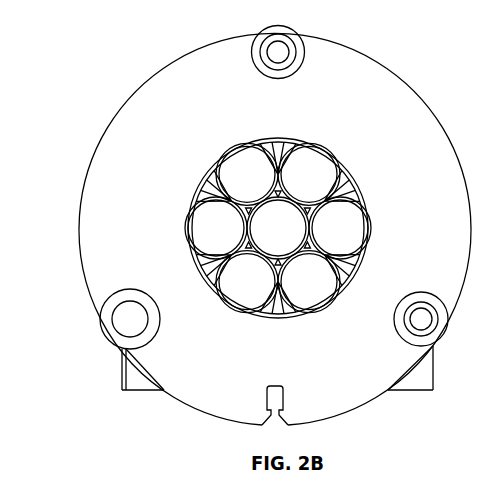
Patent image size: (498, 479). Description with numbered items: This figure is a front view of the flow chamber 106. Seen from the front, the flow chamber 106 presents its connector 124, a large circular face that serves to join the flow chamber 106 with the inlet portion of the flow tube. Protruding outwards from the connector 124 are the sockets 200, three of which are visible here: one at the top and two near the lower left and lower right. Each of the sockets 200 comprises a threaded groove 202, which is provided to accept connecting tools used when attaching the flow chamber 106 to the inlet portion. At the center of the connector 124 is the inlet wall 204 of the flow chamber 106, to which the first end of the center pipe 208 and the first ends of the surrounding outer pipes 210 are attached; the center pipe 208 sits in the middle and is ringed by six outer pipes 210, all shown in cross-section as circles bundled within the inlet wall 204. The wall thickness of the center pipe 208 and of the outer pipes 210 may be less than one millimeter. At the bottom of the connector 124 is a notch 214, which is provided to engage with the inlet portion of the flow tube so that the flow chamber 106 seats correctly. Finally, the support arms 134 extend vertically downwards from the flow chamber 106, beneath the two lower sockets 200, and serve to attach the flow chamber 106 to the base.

The flow chamber 106 is at (61, 24).
The connector 124 is at (72, 192).
The support arms 134 is at (114, 372).
The sockets 200 is at (245, 55).
The threaded grooves 202 is at (280, 48).
The inlet wall 204 is at (283, 129).
The center pipe 208 is at (275, 220).
The outer pipes 210 is at (319, 172).
The notch 214 is at (258, 380).